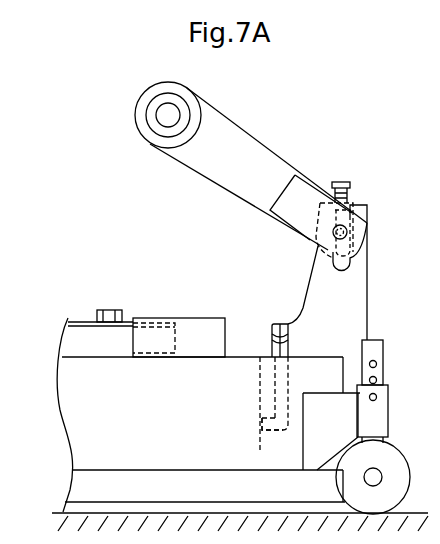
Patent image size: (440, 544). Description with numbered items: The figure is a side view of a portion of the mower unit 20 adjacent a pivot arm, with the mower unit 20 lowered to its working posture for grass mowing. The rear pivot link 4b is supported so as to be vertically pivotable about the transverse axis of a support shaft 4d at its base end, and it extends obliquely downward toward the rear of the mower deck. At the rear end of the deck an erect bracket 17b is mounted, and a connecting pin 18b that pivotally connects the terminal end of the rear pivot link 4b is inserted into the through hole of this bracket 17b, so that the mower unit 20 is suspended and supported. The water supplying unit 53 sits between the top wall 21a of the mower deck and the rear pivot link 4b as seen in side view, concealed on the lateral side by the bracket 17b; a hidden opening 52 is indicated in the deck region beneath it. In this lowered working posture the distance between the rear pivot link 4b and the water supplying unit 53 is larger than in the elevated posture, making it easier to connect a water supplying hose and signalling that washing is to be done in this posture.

The mower unit 20 is at (107, 247).
The top wall 21a is at (197, 355).
The water supplying unit 53 is at (265, 333).
The hole 52 is at (290, 378).
The rear pivot link 4b is at (263, 150).
The support shaft 4d is at (166, 115).
The rear bracket 17b is at (355, 277).
The connecting pin 18b is at (348, 231).